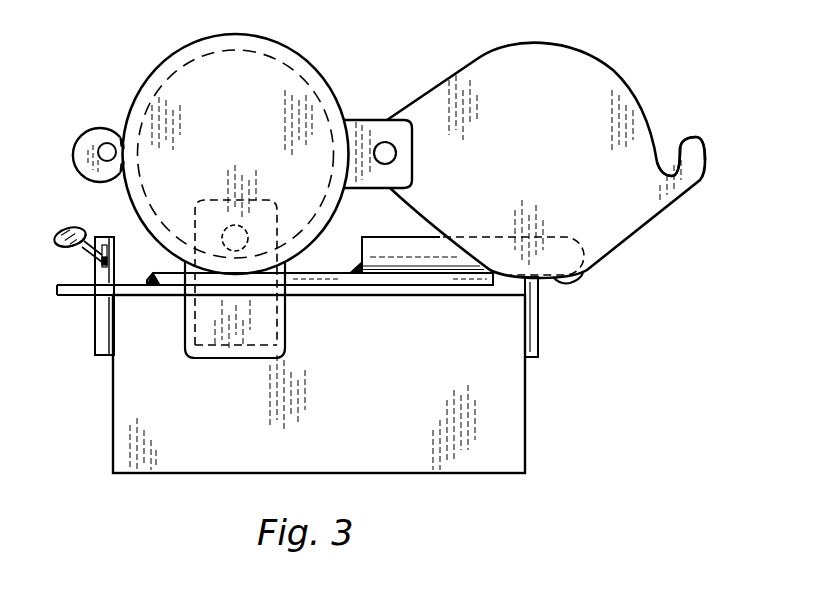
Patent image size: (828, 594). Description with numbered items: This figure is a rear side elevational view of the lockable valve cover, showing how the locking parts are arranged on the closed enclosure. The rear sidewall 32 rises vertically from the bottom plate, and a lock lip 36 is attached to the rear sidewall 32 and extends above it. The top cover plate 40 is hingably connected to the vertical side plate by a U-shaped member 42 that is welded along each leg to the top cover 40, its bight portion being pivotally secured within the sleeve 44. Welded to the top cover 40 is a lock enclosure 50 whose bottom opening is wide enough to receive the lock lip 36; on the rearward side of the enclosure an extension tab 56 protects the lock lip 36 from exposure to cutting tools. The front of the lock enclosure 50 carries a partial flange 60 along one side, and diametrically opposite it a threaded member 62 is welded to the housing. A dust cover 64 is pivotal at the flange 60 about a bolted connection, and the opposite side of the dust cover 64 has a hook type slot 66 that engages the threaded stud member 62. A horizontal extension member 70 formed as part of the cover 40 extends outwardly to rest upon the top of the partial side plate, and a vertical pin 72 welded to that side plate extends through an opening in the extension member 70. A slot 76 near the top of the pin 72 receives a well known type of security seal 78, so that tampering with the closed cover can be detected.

The rear sidewall 32 is at (396, 406).
The lock lip 36 is at (197, 200).
The top cover plate 40 is at (330, 275).
The U-shaped member 42 is at (400, 237).
The sleeve 44 is at (580, 278).
The lock enclosure 50 is at (294, 49).
The extension tab 56 is at (212, 360).
The partial flange 60 is at (366, 120).
The threaded member 62 is at (103, 146).
The dust cover 64 is at (555, 158).
The hook type slot 66 is at (673, 146).
The horizontal extension member 70 is at (68, 297).
The vertical pin 72 is at (95, 337).
The slot 76 is at (102, 263).
The security seal 78 is at (62, 228).